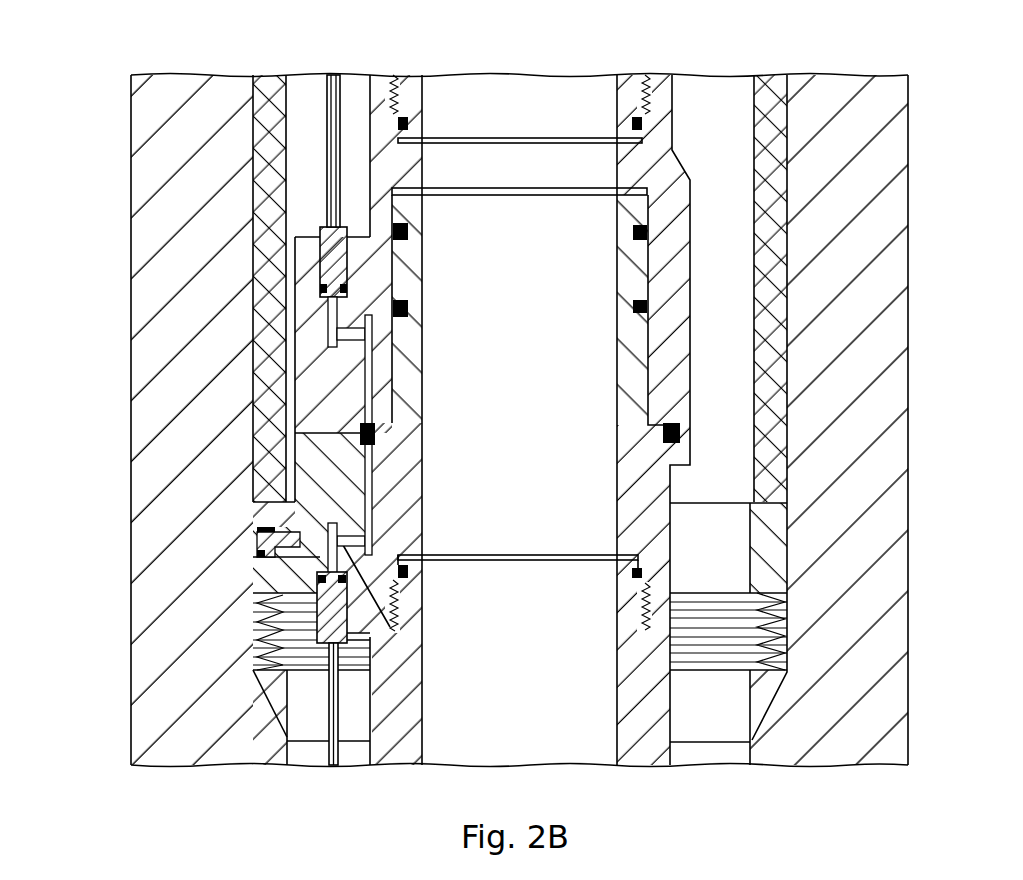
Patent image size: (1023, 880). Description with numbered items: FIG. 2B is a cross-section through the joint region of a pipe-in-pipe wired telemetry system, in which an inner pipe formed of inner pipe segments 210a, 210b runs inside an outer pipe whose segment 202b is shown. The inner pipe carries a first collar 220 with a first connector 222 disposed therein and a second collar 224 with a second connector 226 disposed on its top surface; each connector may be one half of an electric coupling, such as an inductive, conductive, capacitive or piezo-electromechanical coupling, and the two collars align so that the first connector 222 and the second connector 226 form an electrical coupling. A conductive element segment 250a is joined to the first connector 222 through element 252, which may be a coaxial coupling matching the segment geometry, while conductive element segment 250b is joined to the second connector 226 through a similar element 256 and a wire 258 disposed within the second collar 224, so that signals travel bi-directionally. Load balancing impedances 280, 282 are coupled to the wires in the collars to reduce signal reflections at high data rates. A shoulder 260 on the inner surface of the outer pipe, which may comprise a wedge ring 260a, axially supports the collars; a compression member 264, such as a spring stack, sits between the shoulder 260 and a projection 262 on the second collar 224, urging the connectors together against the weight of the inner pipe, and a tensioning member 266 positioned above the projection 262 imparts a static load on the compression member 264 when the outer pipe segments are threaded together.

The outer pipe segment 202b is at (910, 190).
The upper tubular body 210a is at (427, 102).
The lower tubular body 210b is at (424, 693).
The first collar 220 is at (673, 158).
The first connector 222 is at (375, 425).
The second collar 224 is at (672, 570).
The second connector 226 is at (665, 433).
The conductive element segment 250a is at (340, 154).
The conductive element segment 250b is at (338, 722).
The coaxial coupling element 252 is at (350, 260).
The coaxial coupling element 256 is at (348, 608).
The wire 258 is at (373, 480).
The shoulder 260 is at (253, 681).
The wedge ring 260a is at (275, 710).
The projection 262 is at (253, 570).
The compression member 264 is at (253, 650).
The tensioning member 266 is at (253, 201).
The load balancing impedance 280 is at (372, 330).
The load balancing impedance 282 is at (365, 528).